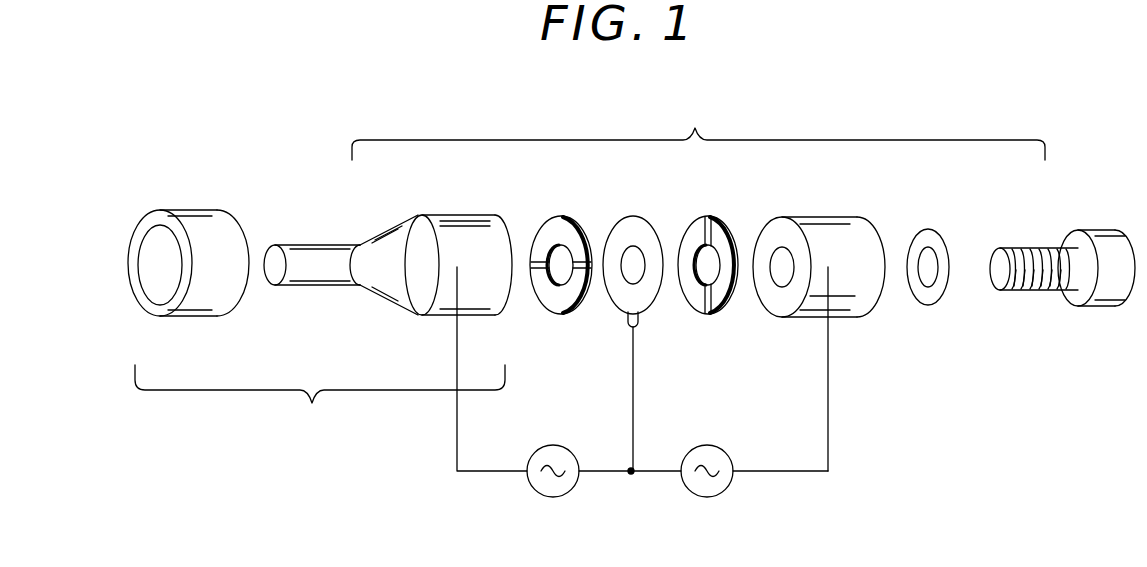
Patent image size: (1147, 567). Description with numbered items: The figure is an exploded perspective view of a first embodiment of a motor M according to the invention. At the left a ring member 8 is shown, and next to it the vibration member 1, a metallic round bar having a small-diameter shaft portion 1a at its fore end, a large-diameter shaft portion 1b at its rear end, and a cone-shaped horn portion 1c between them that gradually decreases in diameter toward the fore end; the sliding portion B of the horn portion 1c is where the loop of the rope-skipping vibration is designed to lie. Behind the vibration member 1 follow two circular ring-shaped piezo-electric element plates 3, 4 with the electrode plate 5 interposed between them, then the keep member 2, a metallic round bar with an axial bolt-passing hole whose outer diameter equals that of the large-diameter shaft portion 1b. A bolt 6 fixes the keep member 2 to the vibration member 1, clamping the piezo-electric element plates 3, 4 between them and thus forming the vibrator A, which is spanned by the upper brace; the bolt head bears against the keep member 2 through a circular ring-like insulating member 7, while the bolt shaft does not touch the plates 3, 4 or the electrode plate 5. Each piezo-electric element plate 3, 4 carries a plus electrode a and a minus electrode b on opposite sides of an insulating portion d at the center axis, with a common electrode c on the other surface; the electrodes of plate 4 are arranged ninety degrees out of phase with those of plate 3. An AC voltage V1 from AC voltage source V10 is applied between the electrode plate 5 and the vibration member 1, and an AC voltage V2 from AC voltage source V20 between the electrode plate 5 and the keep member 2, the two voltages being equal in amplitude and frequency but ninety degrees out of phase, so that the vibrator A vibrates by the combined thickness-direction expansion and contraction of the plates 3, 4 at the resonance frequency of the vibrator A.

The vibration member 1 is at (388, 255).
The small-diameter shaft portion 1a is at (313, 288).
The large-diameter shaft portion 1b is at (441, 303).
The cone-shaped horn portion 1c is at (387, 302).
The sliding portion B is at (372, 245).
The keep member 2 is at (828, 217).
The piezo-electric element plate 3 is at (560, 217).
The piezo-electric element plate 4 is at (706, 216).
The electrode plate 5 is at (633, 216).
The bolt 6 is at (1035, 247).
The insulating member 7 is at (930, 229).
The ring 8 is at (190, 211).
The vibrator A is at (698, 131).
The motor M is at (320, 401).
The plus electrode a is at (573, 240).
The minus electrode b is at (560, 312).
The common electrode c is at (590, 260).
The insulating portion d is at (531, 265).
The AC voltage V1 is at (569, 382).
The AC voltage V2 is at (728, 455).
The AC voltage source V10 is at (553, 497).
The AC voltage source V20 is at (707, 497).